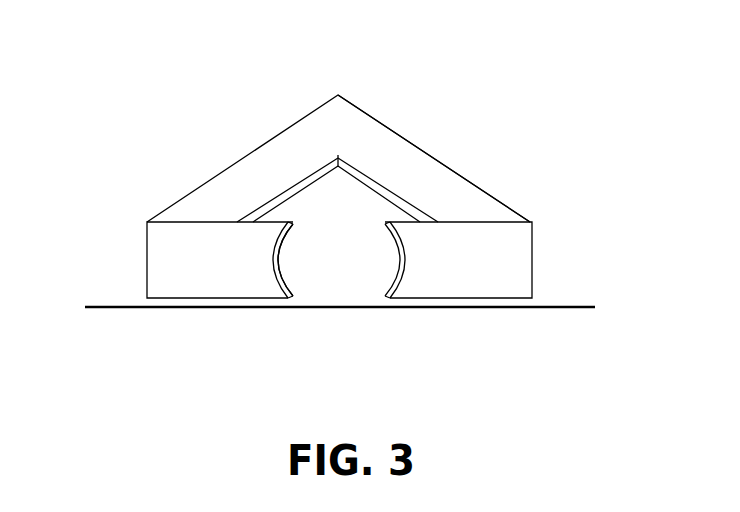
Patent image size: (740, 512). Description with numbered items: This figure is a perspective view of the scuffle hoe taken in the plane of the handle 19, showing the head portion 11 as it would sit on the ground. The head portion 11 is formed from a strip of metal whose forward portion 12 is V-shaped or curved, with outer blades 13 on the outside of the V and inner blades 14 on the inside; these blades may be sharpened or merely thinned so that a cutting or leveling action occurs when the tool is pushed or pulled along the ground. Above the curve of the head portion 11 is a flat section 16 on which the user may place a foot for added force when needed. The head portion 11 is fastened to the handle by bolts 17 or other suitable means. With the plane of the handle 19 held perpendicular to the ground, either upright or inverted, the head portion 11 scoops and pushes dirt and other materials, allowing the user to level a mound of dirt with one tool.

The head portion 11 is at (147, 207).
The forward portion 12 is at (339, 90).
The outer blades 13 is at (443, 152).
The inner blades 14 is at (352, 183).
The flat section 16 is at (430, 300).
The bolts 17 is at (277, 272).
The plane of the handle 19 is at (543, 307).